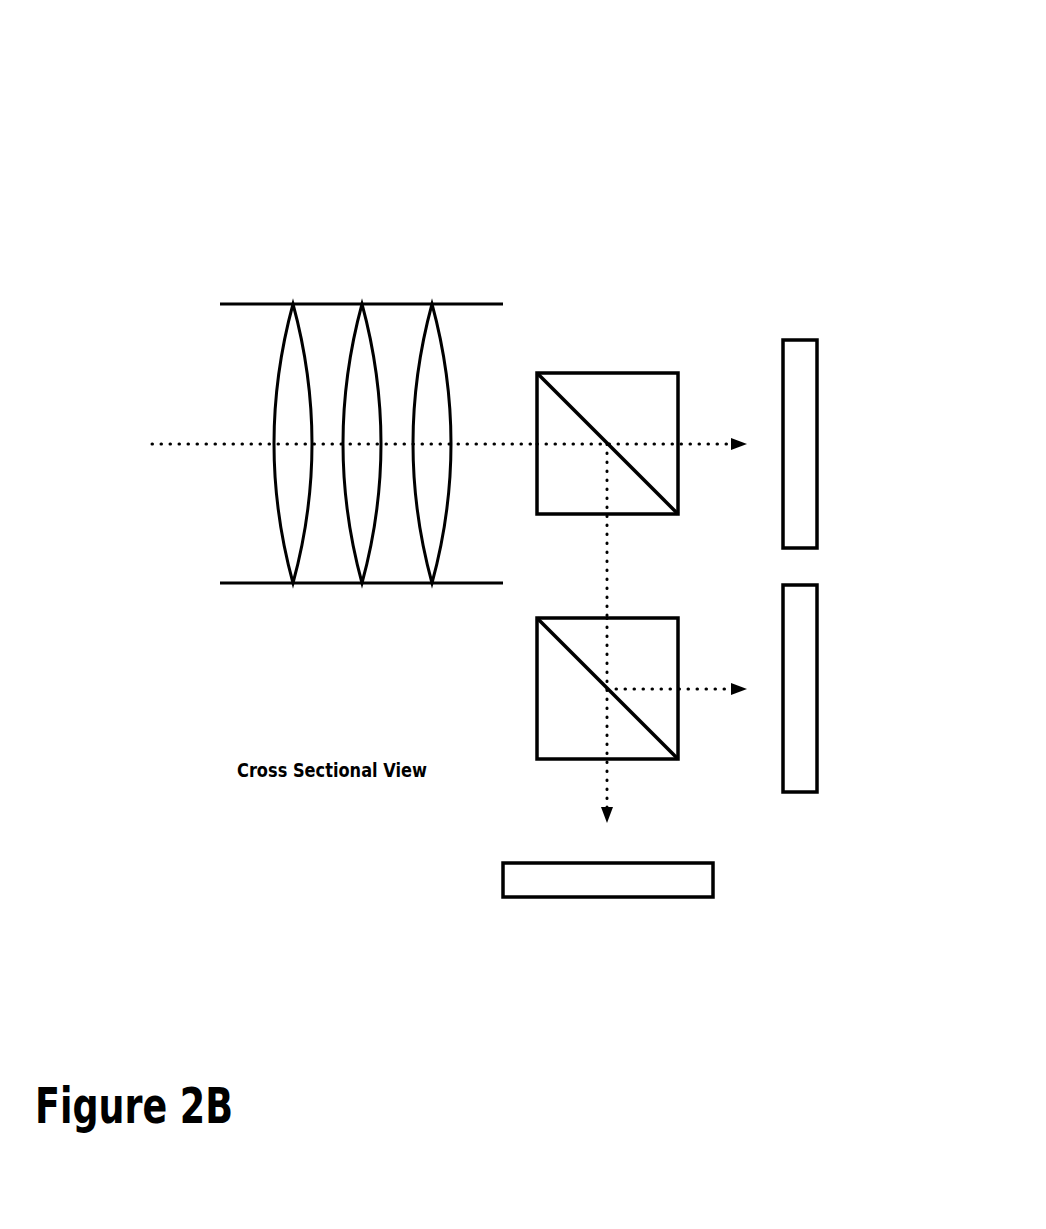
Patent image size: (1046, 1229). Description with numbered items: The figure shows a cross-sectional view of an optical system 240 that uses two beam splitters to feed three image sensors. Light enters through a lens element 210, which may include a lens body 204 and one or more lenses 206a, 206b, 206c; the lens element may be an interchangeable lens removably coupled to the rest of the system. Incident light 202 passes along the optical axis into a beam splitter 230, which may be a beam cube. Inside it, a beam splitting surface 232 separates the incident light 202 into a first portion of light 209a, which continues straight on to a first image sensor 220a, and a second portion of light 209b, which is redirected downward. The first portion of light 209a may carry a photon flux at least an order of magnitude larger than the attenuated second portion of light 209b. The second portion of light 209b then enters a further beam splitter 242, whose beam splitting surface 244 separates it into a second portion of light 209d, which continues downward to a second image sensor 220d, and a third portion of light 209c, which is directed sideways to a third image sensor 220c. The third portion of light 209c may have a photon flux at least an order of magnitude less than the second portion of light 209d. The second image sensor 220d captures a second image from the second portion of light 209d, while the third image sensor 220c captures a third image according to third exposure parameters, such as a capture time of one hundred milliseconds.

The optical system 240 is at (652, 77).
The lens element 210 is at (389, 230).
The lens body 204 is at (232, 302).
The lens 206a is at (300, 323).
The lens 206b is at (370, 323).
The lens 206c is at (440, 323).
The incident light 202 is at (162, 442).
The beam splitter 230 is at (557, 372).
The beam splitting surface 232 is at (594, 428).
The first portion of light 209a is at (703, 442).
The second portion of light 209b is at (610, 531).
The further beam splitter 242 is at (553, 616).
The beam splitting surface 244 is at (582, 660).
The third portion of light 209c is at (710, 688).
The second portion of light 209d is at (610, 788).
The first image sensor 220a is at (810, 339).
The third image sensor 220c is at (817, 792).
The second image sensor 220d is at (713, 882).